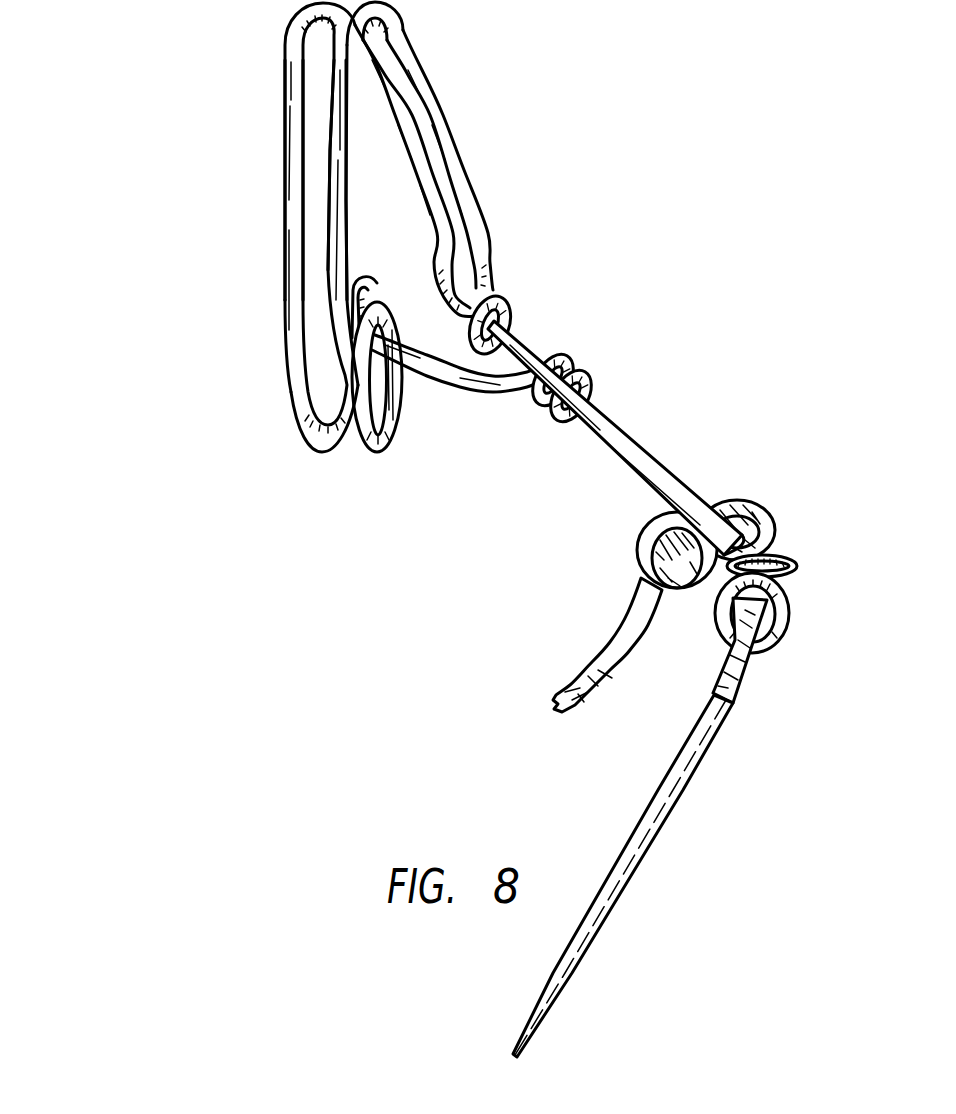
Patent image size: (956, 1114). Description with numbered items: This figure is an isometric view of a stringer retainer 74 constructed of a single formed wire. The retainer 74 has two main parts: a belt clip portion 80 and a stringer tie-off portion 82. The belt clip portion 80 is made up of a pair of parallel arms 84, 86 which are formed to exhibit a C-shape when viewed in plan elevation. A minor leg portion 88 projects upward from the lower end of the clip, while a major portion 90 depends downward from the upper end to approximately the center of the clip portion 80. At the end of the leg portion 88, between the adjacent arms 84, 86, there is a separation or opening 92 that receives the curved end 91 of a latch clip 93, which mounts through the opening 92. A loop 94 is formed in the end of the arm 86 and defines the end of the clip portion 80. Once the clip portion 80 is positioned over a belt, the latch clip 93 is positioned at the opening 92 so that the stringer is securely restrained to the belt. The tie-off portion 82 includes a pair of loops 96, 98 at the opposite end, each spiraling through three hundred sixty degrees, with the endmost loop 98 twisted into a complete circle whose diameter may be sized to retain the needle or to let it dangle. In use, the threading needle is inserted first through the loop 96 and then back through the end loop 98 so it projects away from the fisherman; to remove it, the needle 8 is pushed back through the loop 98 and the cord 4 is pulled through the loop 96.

The stringer retainer 74 is at (182, 333).
The belt clip portion 80 is at (275, 37).
The stringer tie-off portion 82 is at (660, 441).
The arm 84 is at (284, 218).
The arm 86 is at (347, 218).
The minor leg portion 88 is at (398, 385).
The major portion 90 is at (413, 43).
The curved end 91 is at (367, 280).
The opening 92 is at (375, 400).
The latch clip 93 is at (527, 390).
The loop 94 is at (510, 307).
The loop 96 is at (642, 590).
The end loop 98 is at (723, 648).
The cord 4 is at (593, 670).
The needle 8 is at (657, 790).